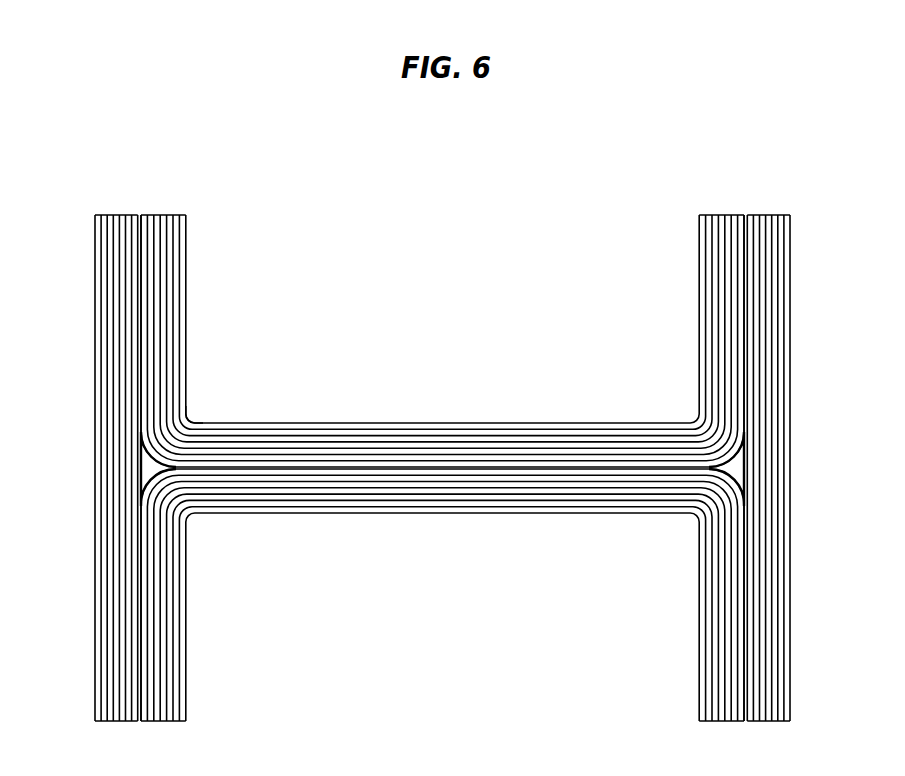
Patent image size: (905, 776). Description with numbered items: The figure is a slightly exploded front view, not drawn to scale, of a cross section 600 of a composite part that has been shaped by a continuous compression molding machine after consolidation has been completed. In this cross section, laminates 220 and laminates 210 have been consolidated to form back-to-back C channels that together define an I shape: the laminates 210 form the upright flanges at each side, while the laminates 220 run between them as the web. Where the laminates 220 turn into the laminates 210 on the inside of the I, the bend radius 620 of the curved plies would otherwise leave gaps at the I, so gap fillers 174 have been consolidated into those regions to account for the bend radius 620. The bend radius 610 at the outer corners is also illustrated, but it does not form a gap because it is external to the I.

The cross section 600 is at (655, 134).
The laminates 210 is at (87, 518).
The laminates 220 is at (423, 413).
The bend radius 610 is at (186, 400).
The gap fillers 174 is at (150, 465).
The bend radius 620 is at (708, 488).